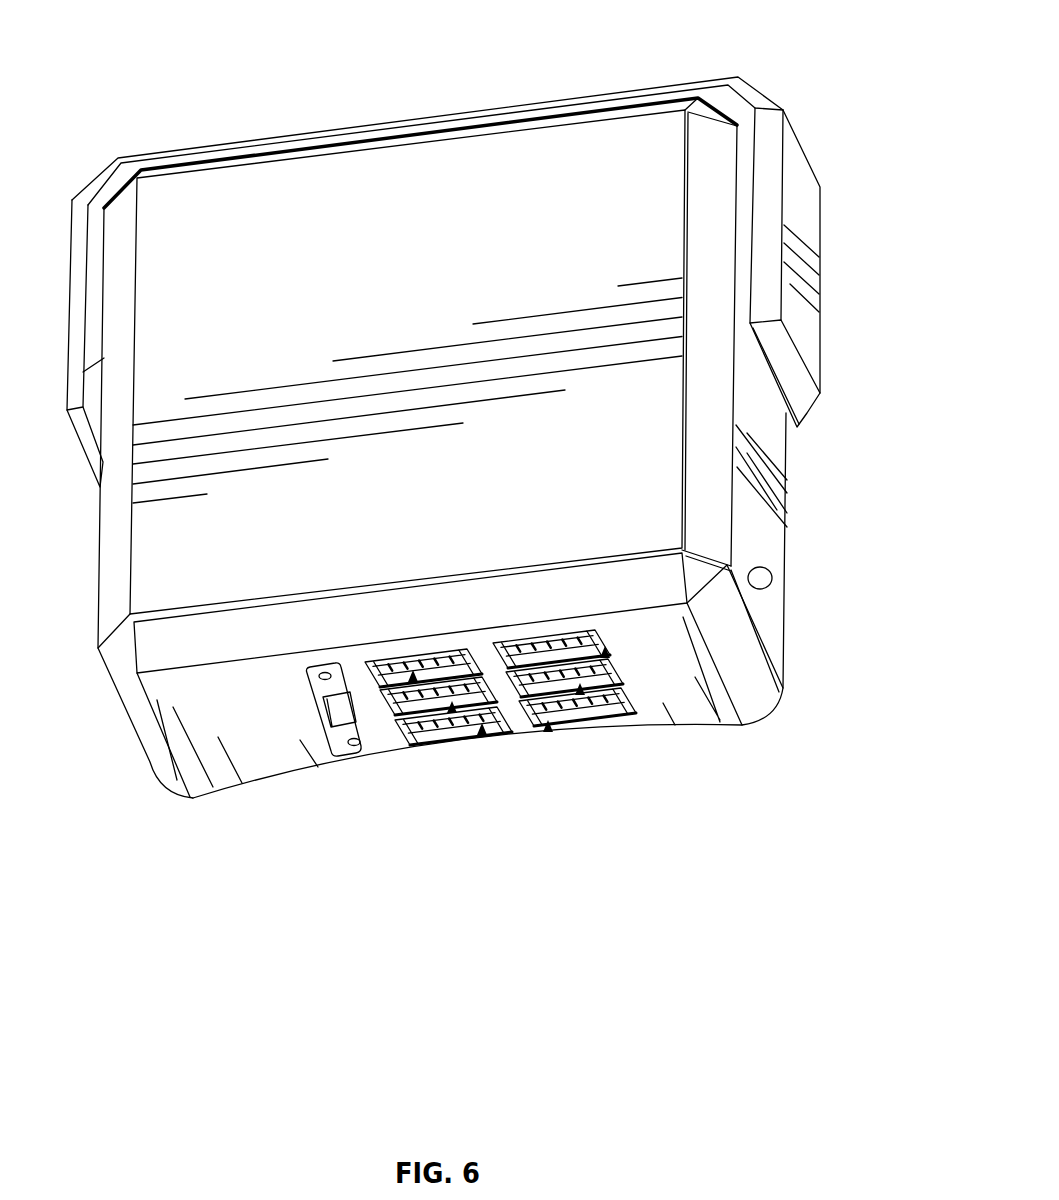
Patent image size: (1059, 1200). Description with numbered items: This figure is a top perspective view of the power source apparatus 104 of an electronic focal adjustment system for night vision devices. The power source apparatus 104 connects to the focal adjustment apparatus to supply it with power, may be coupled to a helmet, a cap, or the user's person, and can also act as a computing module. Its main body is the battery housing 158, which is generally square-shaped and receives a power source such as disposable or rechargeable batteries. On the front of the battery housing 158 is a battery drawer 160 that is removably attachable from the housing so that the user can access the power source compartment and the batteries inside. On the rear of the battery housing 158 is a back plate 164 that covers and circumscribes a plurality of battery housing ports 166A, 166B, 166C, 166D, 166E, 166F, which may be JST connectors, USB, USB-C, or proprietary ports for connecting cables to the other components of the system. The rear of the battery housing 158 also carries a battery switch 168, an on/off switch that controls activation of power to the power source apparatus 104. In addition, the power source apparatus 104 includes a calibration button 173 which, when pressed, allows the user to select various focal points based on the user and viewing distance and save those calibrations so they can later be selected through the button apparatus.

The power source apparatus 104 is at (423, 223).
The battery housing 158 is at (267, 232).
The battery drawer 160 is at (742, 108).
The back plate 164 is at (758, 675).
The battery housing port 166A is at (413, 678).
The battery housing port 166B is at (452, 709).
The battery housing port 166C is at (482, 731).
The battery housing port 166D is at (605, 655).
The battery housing port 166E is at (580, 690).
The battery housing port 166F is at (548, 728).
The battery switch 168 is at (341, 710).
The calibration button 173 is at (768, 587).